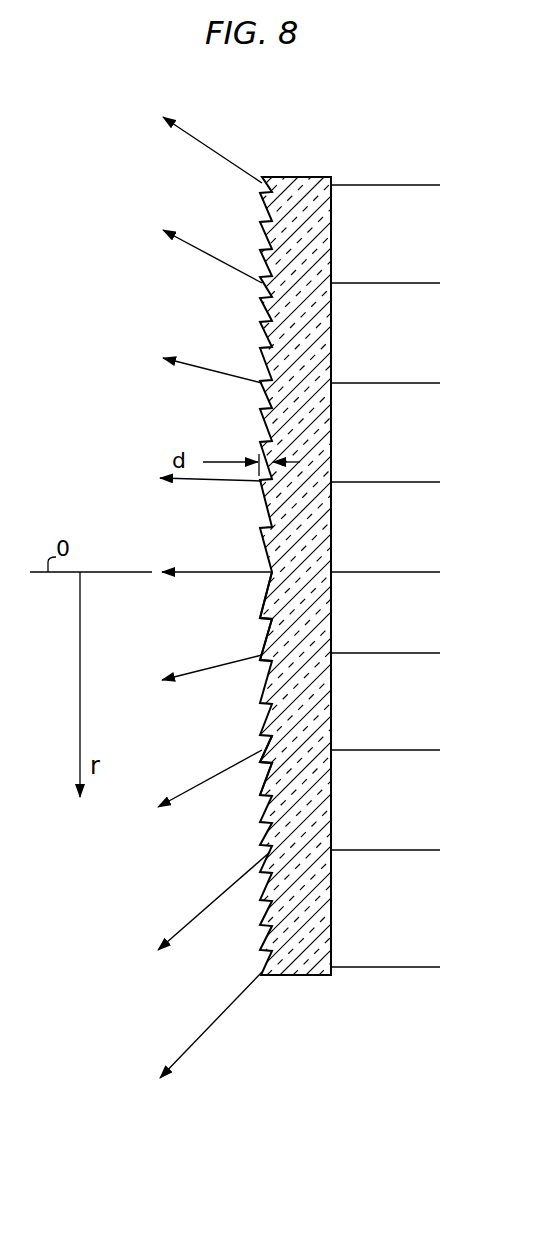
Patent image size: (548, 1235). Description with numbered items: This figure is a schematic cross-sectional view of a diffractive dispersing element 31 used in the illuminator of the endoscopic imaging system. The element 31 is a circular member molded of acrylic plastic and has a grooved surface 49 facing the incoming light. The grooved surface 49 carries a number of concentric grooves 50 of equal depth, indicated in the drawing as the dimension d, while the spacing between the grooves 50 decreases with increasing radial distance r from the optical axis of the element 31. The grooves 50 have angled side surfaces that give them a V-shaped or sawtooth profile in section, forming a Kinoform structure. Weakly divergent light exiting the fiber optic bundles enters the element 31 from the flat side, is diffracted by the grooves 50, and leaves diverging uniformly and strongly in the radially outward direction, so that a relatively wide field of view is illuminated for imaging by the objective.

The diffractive dispersing element 31 is at (208, 847).
The grooved surface 49 is at (262, 742).
The concentric grooves 50 is at (262, 663).